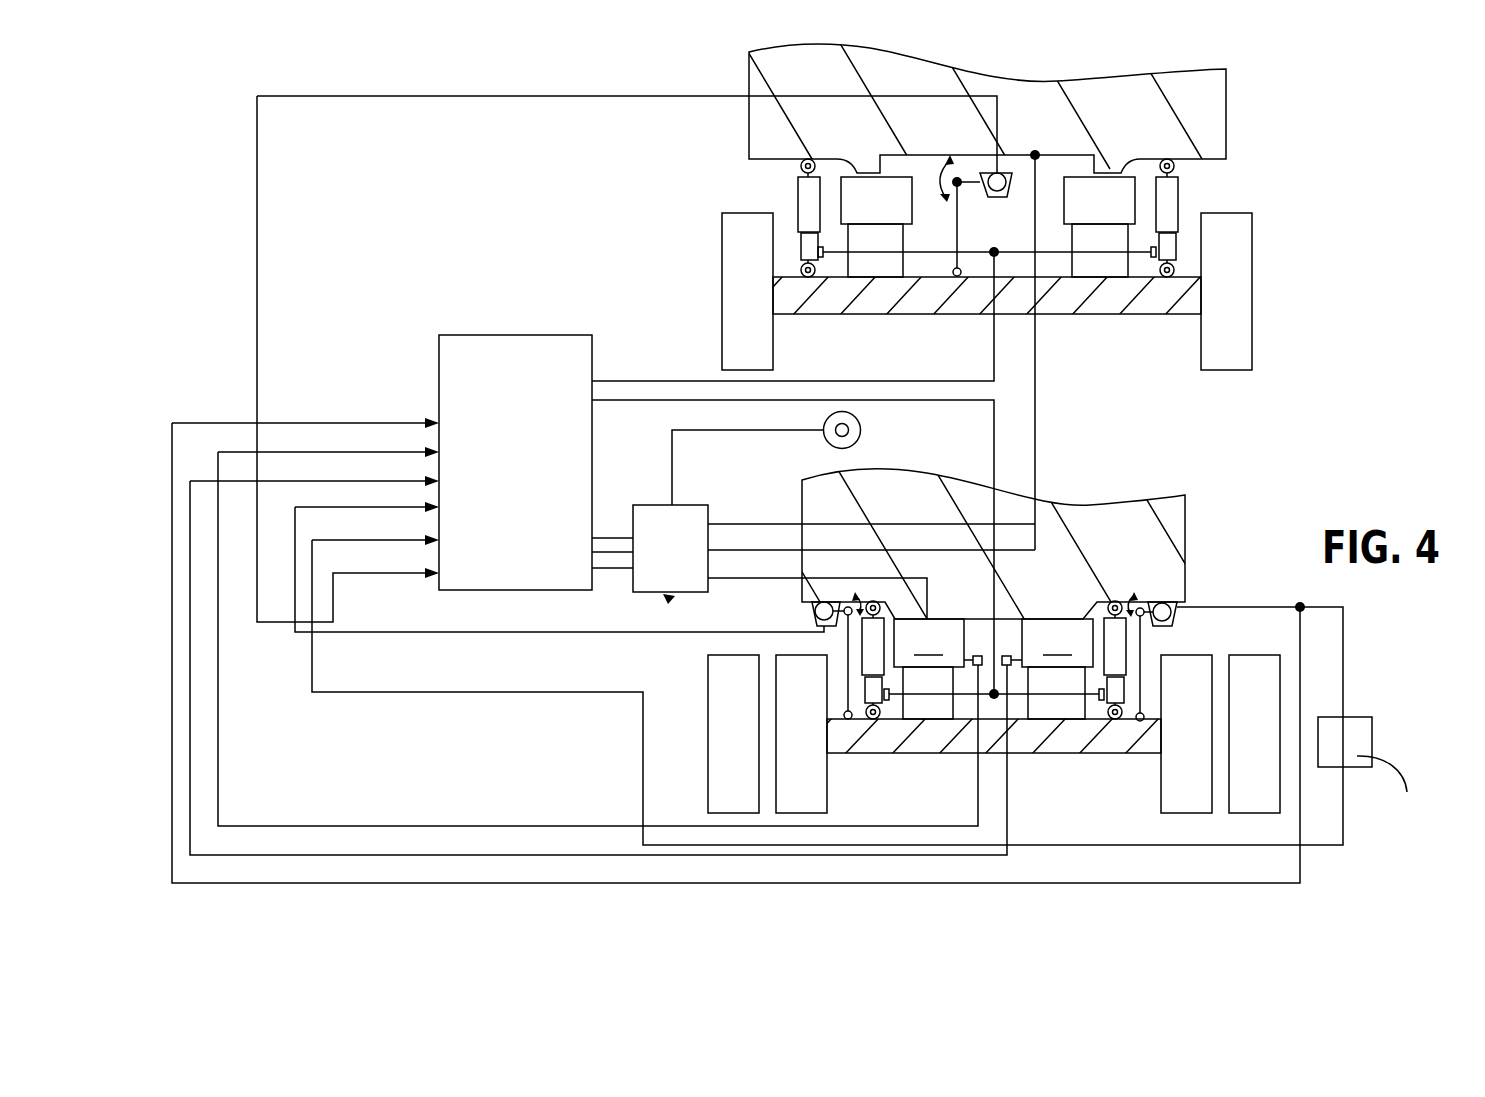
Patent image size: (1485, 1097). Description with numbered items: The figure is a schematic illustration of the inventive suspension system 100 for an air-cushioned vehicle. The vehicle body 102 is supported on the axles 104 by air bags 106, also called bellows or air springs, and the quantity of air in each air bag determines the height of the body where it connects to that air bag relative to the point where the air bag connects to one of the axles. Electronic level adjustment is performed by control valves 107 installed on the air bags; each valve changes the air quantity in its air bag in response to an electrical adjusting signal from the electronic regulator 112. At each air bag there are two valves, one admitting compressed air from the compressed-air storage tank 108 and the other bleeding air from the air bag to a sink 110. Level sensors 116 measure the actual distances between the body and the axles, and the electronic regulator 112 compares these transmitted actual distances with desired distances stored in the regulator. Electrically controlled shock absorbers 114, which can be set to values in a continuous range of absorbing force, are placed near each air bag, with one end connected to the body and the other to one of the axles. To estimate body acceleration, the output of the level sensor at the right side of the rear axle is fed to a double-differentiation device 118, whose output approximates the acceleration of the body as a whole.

The suspension system 100 is at (1203, 203).
The body 102 is at (1223, 96).
The axles 104 is at (1106, 295).
The air bags 106 is at (902, 213).
The control valves 107 is at (697, 578).
The compressed-air storage tank 108 is at (859, 431).
The sink 110 is at (669, 600).
The electronic regulator 112 is at (450, 584).
The shock absorbers 114 is at (797, 203).
The level sensors 116 is at (1001, 198).
The double-differentiation device 118 is at (1352, 723).